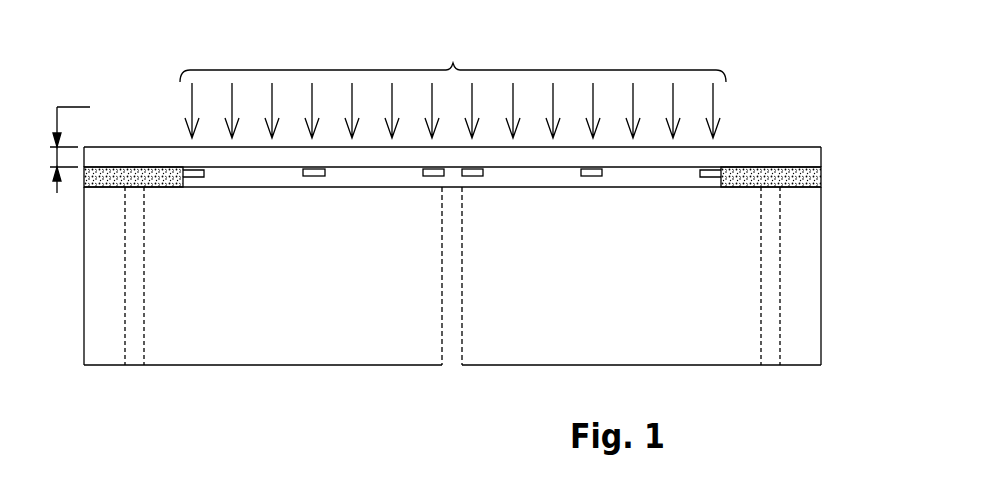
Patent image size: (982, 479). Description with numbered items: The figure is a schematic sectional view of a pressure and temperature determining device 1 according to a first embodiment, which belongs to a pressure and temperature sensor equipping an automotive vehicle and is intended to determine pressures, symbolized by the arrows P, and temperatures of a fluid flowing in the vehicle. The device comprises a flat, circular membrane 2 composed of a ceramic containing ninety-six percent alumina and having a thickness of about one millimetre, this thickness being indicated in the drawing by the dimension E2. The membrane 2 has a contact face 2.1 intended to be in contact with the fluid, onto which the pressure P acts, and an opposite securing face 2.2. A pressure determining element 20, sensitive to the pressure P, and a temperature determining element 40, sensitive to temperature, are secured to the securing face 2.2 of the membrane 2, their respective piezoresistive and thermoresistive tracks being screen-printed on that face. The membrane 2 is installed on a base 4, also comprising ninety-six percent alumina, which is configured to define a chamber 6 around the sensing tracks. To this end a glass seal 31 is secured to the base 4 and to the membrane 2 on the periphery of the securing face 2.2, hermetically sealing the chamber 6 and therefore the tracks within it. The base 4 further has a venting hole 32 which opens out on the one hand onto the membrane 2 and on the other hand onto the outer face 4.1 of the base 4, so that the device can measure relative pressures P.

The pressure and temperature determining device 1 is at (136, 35).
The membrane 2 is at (763, 155).
The contact face 2.1 is at (739, 142).
The securing face 2.2 is at (652, 172).
The base 4 is at (800, 287).
The outer face 4.1 is at (376, 369).
The chamber 6 is at (265, 178).
The pressure determining element 20 is at (455, 181).
The glass seal 31 is at (108, 180).
The venting hole 32 is at (452, 332).
The temperature determining element 40 is at (310, 182).
The pressure P is at (453, 87).
The thickness of membrane E2 is at (70, 137).